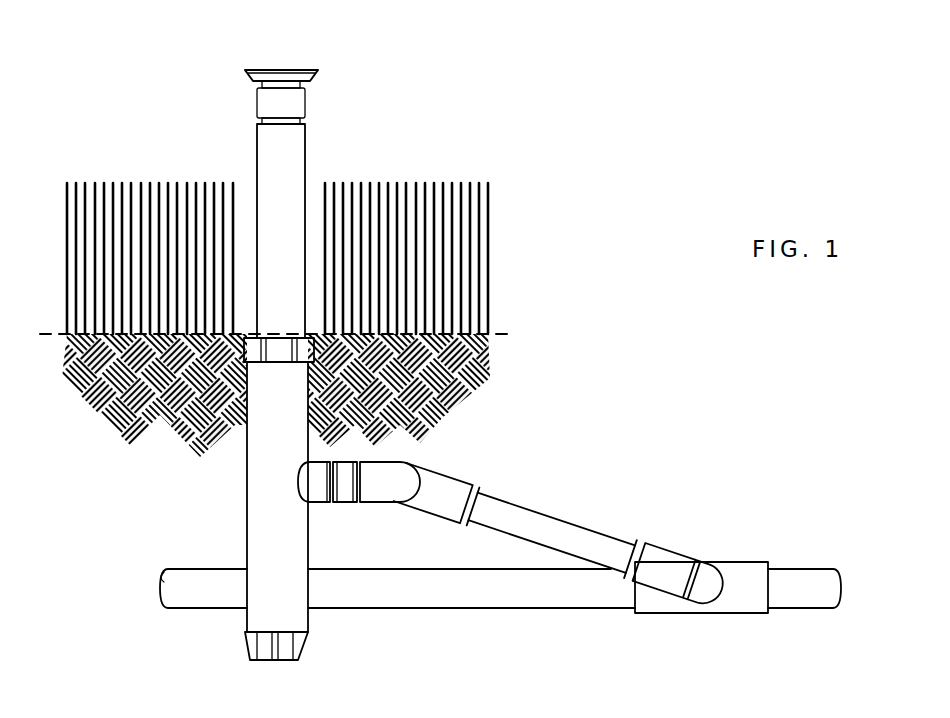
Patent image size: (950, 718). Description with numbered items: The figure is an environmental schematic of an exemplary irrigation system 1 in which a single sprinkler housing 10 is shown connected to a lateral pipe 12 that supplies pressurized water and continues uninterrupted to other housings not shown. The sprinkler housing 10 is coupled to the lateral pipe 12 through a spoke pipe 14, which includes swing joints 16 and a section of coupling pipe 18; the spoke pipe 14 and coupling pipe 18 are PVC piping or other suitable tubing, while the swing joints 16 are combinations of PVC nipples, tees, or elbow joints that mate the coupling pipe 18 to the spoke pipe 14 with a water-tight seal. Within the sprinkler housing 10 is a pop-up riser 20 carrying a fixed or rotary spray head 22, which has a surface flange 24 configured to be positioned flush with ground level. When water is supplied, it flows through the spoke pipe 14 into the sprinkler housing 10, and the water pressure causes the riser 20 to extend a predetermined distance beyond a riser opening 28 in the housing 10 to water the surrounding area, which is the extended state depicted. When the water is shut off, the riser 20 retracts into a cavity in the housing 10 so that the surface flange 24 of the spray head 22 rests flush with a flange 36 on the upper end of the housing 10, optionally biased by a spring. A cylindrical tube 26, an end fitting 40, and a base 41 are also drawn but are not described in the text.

The irrigation system 1 is at (550, 99).
The sprinkler housing 10 is at (242, 498).
The lateral pipe 12 is at (483, 593).
The spoke pipe 14 is at (538, 527).
The swing joint 16 is at (403, 477).
The coupling pipe 18 is at (347, 492).
The pop-up riser 20 is at (186, 89).
The spray head 22 is at (318, 91).
The surface flange 24 is at (282, 70).
The riser pipe 26 is at (288, 167).
The riser opening 28 is at (246, 324).
The flange 36 is at (280, 352).
The end cap 40 is at (320, 493).
The base anchor 41 is at (281, 668).